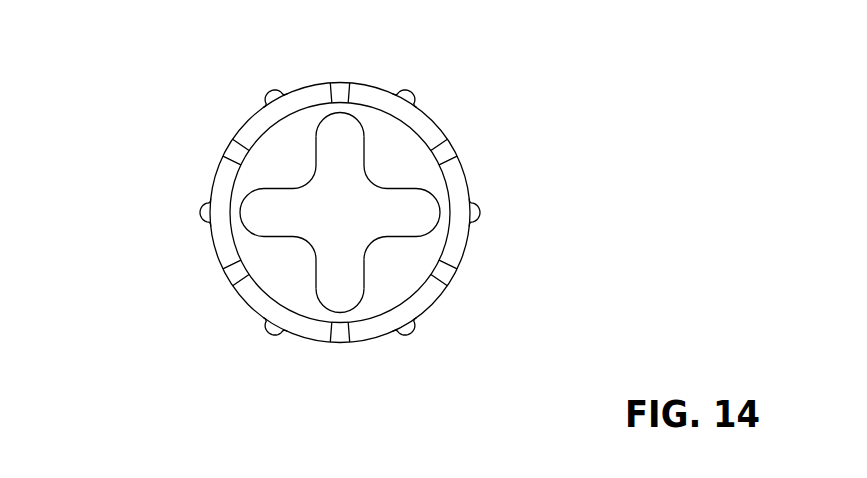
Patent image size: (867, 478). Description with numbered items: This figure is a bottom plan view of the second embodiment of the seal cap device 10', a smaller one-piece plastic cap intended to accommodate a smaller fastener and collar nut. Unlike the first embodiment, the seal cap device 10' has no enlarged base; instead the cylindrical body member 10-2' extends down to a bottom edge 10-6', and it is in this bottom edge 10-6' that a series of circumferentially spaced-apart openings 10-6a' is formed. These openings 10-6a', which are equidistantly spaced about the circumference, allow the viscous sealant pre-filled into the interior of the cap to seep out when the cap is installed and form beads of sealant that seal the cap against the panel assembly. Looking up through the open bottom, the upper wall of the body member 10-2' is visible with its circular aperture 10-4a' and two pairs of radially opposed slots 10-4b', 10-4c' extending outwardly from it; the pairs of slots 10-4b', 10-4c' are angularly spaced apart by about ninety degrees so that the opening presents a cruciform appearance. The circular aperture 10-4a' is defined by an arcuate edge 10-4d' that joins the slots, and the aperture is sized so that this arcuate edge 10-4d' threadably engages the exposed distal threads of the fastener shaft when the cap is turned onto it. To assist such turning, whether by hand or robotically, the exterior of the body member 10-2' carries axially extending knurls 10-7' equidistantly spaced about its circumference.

The seal cap device 10' is at (311, 239).
The cylindrical body member 10-2' is at (403, 213).
The circular aperture 10-4a' is at (340, 213).
The slots 10-4b' is at (312, 213).
The slots 10-4c' is at (288, 152).
The arcuate edge 10-4d' is at (394, 341).
The bottom edge 10-6' is at (340, 191).
The openings 10-6a' is at (260, 274).
The knurls 10-7' is at (305, 238).